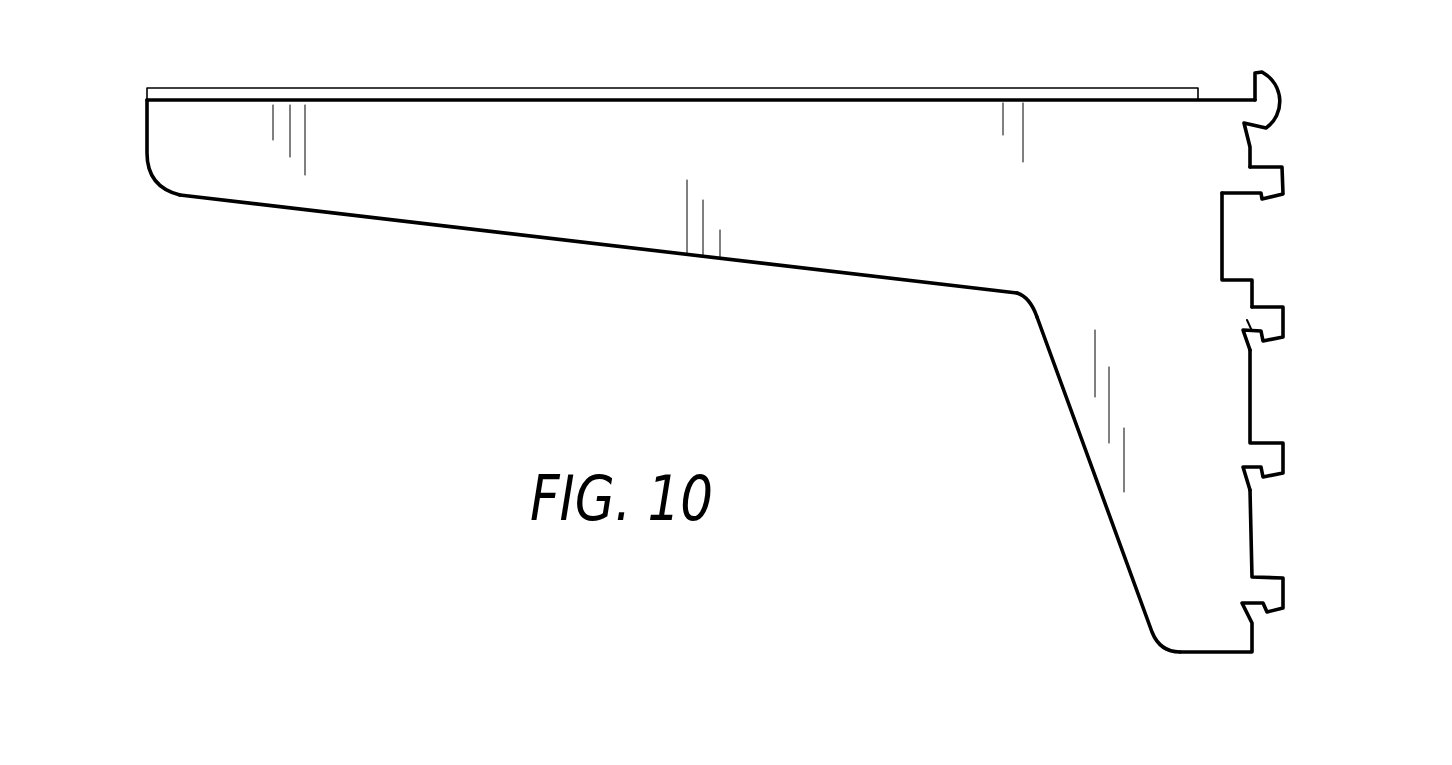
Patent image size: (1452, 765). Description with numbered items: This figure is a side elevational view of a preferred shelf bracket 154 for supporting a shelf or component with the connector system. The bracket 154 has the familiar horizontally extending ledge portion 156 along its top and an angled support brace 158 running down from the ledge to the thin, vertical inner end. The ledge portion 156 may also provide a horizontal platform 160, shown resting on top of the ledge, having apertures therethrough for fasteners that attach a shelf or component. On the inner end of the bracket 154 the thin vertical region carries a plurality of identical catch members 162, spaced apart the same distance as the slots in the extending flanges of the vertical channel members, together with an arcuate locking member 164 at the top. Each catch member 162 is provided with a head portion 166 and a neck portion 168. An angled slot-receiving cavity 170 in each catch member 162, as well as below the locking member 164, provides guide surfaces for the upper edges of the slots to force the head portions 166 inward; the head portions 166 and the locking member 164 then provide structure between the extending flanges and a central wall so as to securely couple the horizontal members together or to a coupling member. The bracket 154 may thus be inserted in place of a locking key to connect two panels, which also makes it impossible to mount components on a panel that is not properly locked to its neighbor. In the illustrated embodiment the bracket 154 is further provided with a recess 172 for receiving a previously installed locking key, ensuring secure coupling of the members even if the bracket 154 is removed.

The bracket 154 is at (477, 270).
The ledge portion 156 is at (257, 178).
The angled support brace 158 is at (1130, 533).
The horizontal platform 160 is at (558, 90).
The catch members 162 is at (1287, 180).
The arcuate locking member 164 is at (1280, 92).
The head portion 166 is at (1283, 335).
The neck portion 168 is at (1252, 332).
The angled slot-receiving cavity 170 is at (1257, 480).
The recess 172 is at (1225, 258).